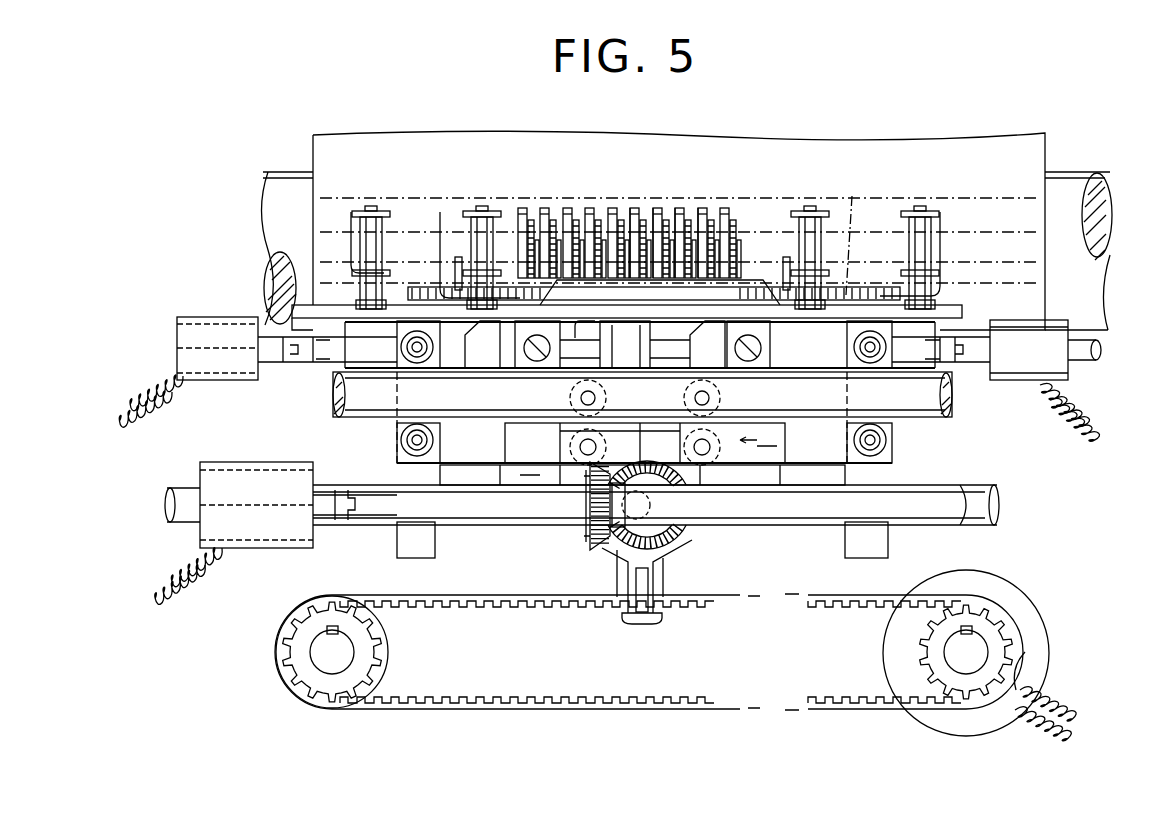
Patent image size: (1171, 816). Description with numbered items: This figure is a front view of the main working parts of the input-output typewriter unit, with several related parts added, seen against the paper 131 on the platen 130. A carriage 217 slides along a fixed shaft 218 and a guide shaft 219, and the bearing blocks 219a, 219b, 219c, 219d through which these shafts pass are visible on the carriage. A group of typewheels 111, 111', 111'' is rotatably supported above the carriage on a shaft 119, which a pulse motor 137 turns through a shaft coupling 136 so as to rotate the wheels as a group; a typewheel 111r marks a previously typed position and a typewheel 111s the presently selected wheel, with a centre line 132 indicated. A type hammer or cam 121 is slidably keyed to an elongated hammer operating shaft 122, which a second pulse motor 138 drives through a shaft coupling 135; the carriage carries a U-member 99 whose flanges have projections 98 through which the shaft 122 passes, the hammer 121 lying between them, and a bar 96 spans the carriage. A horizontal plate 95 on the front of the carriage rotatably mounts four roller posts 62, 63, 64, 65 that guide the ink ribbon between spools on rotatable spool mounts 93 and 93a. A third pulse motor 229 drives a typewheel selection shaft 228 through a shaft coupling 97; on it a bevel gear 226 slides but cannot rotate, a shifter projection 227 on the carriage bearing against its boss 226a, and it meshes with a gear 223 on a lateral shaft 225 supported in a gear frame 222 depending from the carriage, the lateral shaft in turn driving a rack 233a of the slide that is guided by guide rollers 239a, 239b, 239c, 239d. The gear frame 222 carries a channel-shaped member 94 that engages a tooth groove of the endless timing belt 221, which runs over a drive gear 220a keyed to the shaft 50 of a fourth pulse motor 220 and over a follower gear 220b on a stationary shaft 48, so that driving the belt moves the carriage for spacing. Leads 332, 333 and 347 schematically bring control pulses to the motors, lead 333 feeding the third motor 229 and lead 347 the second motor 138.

The paper 131 is at (937, 150).
The platen 130 is at (1096, 186).
The roller post 62 is at (360, 208).
The roller post 63 is at (472, 208).
The roller post 64 is at (800, 208).
The roller post 65 is at (910, 208).
The typewheel 111 is at (636, 226).
The typewheel 111r is at (634, 208).
The typewheel 111s is at (657, 208).
The typewheel 111' is at (706, 212).
The typewheel 111'' is at (682, 225).
The center line 132 is at (851, 233).
The spool mount 93 is at (424, 276).
The spool mount 93a is at (862, 287).
The plate 95 is at (402, 298).
The projection 98 is at (572, 332).
The carriage plate 96 is at (342, 320).
The pulse motor 137 is at (192, 330).
The second pulse motor 138 is at (1072, 379).
The shaft 119 is at (304, 366).
The shaft coupling 136 is at (292, 364).
The shaft coupling 135 is at (944, 364).
The shaft 122 is at (326, 368).
The guide shaft 219 is at (358, 404).
The bearing block 219a is at (416, 367).
The bearing block 219b is at (399, 448).
The bearing block 219c is at (869, 367).
The bearing block 219d is at (893, 440).
The type hammer 121 is at (655, 357).
The guide roller 239a is at (570, 398).
The guide roller 239b is at (606, 447).
The guide roller 239c is at (720, 398).
The guide roller 239d is at (752, 450).
The rack 233a is at (506, 458).
The U-member 99 is at (760, 437).
The shaft 218 is at (176, 512).
The third pulse motor 229 is at (246, 470).
The shaft 228 is at (372, 522).
The shaft coupling 97 is at (346, 516).
The carriage 217 is at (416, 552).
The lateral shaft 225 is at (690, 520).
The bevel gear 226 is at (606, 552).
The boss 226a is at (588, 528).
The shifter projection 227 is at (578, 510).
The gear 223 is at (670, 550).
The gear frame 222 is at (664, 586).
The channel-shaped member 94 is at (645, 598).
The endless belt 221 is at (560, 700).
The stationary shaft 48 is at (362, 656).
The shaft 50 is at (956, 655).
The fourth pulse motor 220 is at (1040, 622).
The drive gear 220a is at (1028, 656).
The follower gear 220b is at (302, 672).
The spring 332 is at (138, 404).
The lead 333 is at (170, 586).
The lead 347 is at (1088, 428).